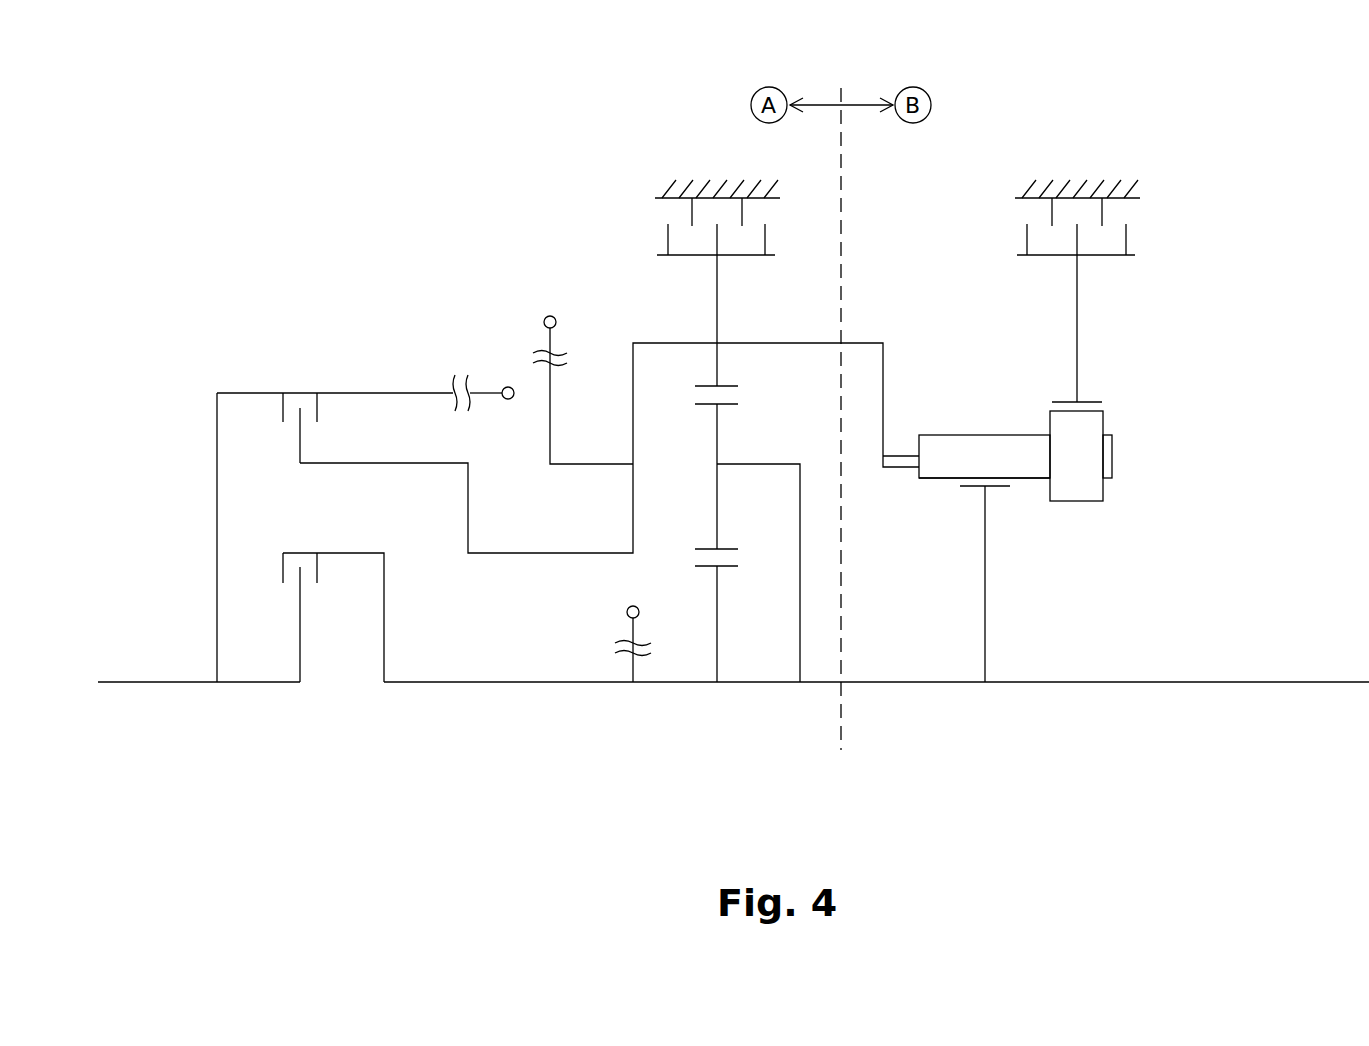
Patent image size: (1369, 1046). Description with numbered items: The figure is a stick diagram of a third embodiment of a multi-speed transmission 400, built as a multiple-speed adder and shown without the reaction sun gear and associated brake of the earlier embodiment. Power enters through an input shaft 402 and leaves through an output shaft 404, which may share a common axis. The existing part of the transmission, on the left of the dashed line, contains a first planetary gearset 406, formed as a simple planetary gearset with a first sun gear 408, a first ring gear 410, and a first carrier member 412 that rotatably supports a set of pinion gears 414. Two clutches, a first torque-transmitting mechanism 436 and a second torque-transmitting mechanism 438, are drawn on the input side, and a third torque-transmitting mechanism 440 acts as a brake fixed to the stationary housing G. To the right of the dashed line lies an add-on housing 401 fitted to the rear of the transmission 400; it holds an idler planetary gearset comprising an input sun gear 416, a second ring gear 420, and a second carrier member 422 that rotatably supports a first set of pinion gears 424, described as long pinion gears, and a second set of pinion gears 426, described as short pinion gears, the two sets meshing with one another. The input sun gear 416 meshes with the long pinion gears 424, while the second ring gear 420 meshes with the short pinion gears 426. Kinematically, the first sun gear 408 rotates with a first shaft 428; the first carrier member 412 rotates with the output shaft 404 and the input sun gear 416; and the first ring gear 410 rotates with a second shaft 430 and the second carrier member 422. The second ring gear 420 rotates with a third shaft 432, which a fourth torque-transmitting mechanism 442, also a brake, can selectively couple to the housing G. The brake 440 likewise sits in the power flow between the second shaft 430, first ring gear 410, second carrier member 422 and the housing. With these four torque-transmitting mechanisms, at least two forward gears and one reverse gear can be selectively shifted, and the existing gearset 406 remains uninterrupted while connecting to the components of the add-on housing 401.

The multi-speed transmission 400 is at (256, 196).
The add-on housing 401 is at (989, 112).
The input shaft 402 is at (153, 680).
The output shaft 404 is at (1308, 680).
The first planetary gearset 406 is at (716, 740).
The first sun gear 408 is at (730, 566).
The first ring gear 410 is at (728, 386).
The first carrier member 412 is at (697, 465).
The set of pinion gears 414 is at (735, 549).
The input sun gear 416 is at (995, 486).
The second ring gear 420 is at (1093, 398).
The second carrier member 422 is at (986, 408).
The first set of pinion gears 424 is at (935, 478).
The second set of pinion gears 426 is at (1103, 488).
The first shaft 428 is at (540, 684).
The second shaft 430 is at (397, 463).
The third shaft 432 is at (1077, 293).
The first torque-transmitting mechanism 436 is at (281, 568).
The second torque-transmitting mechanism 438 is at (281, 408).
The third torque-transmitting mechanism 440 is at (638, 220).
The fourth torque-transmitting mechanism 442 is at (998, 220).